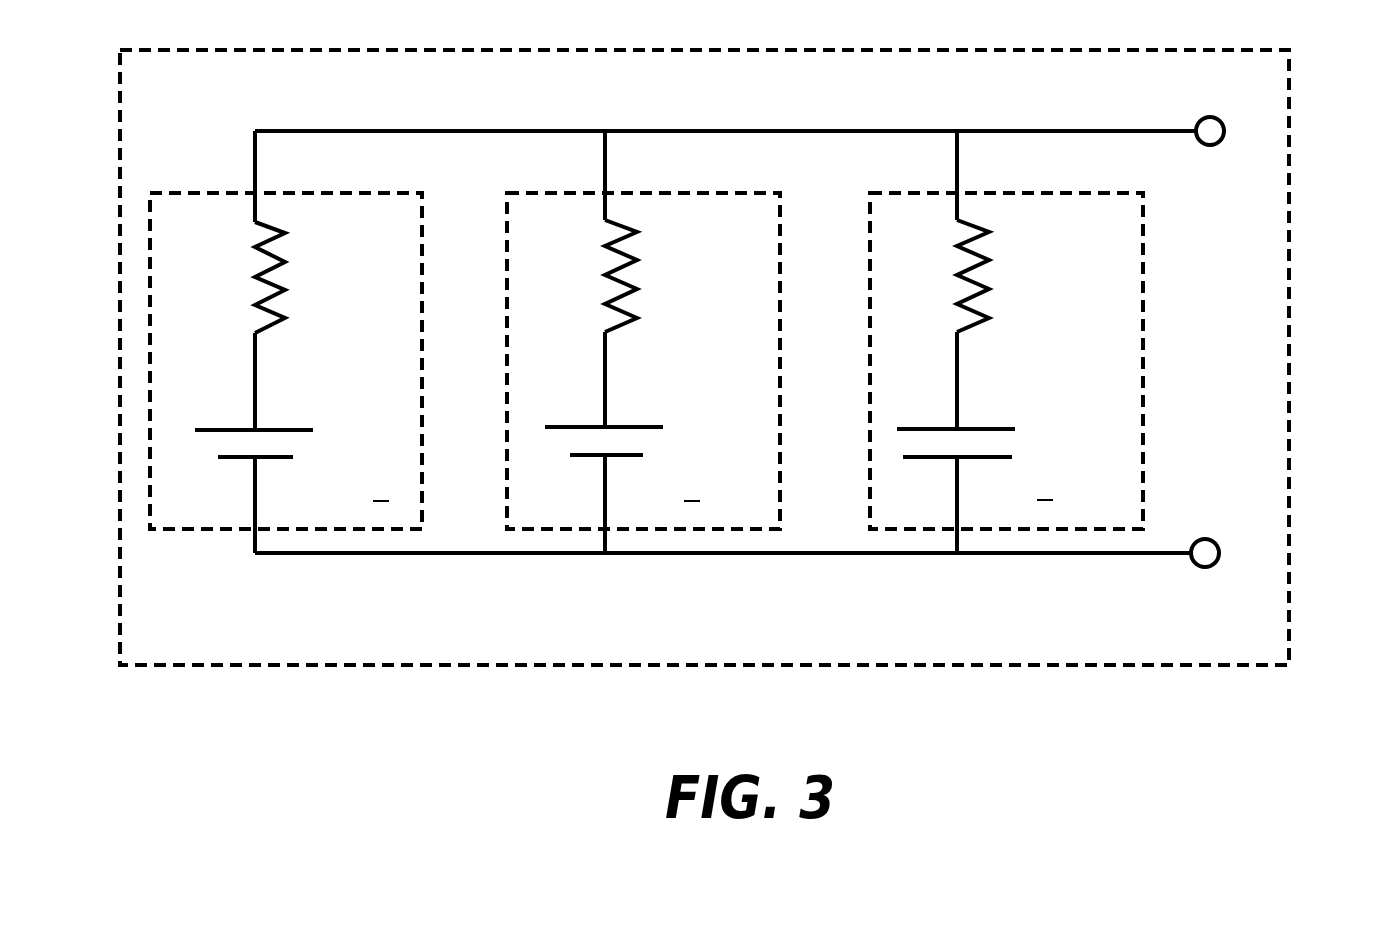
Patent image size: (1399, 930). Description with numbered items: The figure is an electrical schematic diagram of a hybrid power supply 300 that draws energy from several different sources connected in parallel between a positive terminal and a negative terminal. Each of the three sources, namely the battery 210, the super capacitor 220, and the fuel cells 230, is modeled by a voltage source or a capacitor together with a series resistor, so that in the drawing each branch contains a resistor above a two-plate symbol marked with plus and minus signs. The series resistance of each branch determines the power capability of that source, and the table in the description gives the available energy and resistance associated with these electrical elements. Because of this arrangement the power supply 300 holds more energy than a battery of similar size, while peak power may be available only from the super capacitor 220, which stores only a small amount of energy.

The power supply 300 is at (752, 357).
The fuel cells 230 is at (416, 188).
The battery 210 is at (773, 187).
The super capacitor 220 is at (1138, 186).